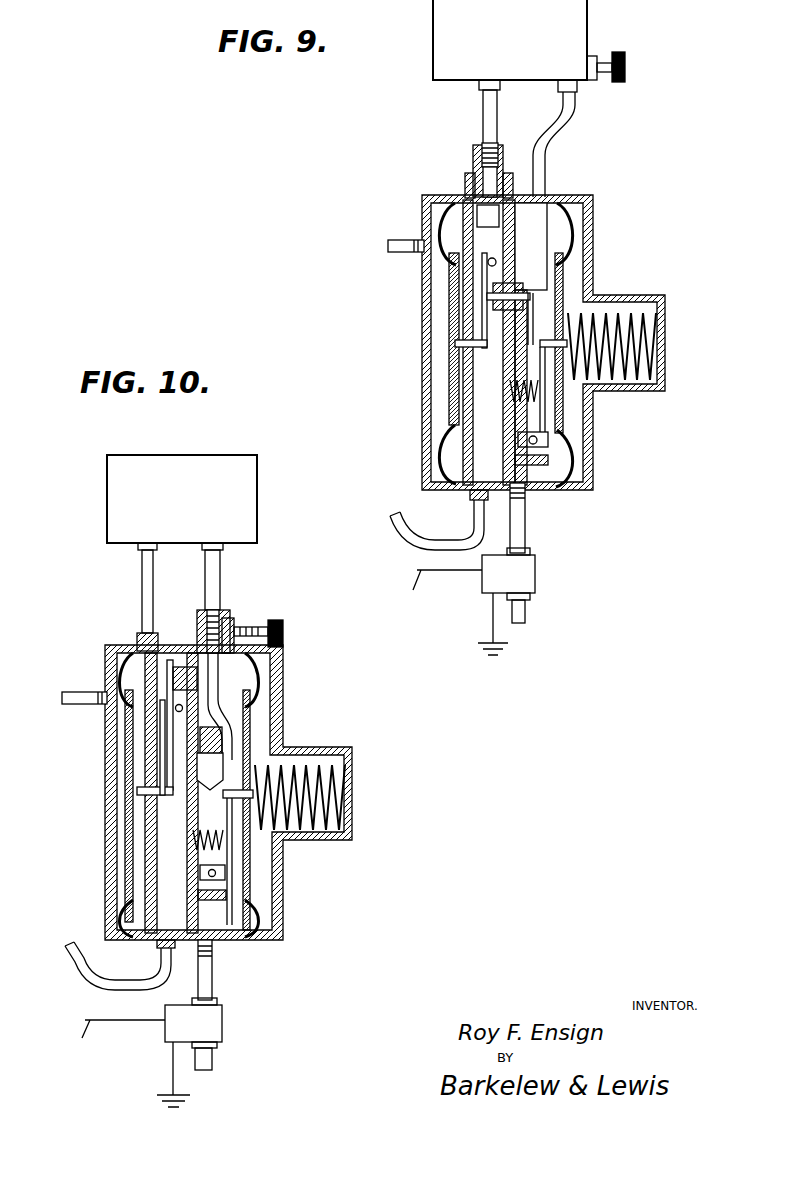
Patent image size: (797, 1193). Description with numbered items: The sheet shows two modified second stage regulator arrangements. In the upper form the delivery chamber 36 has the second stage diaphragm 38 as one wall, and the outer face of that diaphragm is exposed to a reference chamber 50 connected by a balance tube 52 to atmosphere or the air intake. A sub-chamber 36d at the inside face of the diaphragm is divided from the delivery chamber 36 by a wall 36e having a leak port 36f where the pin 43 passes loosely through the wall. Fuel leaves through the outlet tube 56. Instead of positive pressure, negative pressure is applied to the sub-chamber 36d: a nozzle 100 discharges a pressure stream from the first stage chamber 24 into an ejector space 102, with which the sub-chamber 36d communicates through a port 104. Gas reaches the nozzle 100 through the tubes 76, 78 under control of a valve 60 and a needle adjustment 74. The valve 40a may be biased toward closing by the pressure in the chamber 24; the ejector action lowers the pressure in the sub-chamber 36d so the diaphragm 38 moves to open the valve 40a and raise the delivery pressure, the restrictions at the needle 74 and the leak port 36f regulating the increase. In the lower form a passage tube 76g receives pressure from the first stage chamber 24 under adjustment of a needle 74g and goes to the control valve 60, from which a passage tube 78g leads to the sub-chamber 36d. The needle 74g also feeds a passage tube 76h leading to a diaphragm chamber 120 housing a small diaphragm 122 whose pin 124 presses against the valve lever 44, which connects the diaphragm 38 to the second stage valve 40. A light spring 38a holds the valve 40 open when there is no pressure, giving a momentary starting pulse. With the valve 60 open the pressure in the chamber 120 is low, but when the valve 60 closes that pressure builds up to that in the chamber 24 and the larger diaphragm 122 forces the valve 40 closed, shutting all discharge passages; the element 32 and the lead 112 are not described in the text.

In FIG. 9, the control valve 60 is at (510, 40).
In FIG. 10, the control valve 60 is at (182, 499).
In FIG. 9, the needle adjustment 74 is at (612, 56).
In FIG. 9, the tube 78 is at (483, 112).
In FIG. 9, the tube 76 is at (577, 115).
In FIG. 9, the nozzle 100 is at (478, 190).
In FIG. 9, the port 104 is at (468, 213).
In FIG. 9, the reference chamber 50 is at (438, 272).
In FIG. 9, the balance tube 52 is at (400, 240).
In FIG. 10, the balance tube 52 is at (78, 705).
In FIG. 9, the first stage chamber 24 is at (537, 218).
In FIG. 10, the first stage chamber 24 is at (230, 690).
In FIG. 9, the ejector space 102 is at (492, 227).
In FIG. 9, the second stage diaphragm 38 is at (452, 378).
In FIG. 10, the second stage diaphragm 38 is at (130, 853).
In FIG. 9, the sub-chamber 36d is at (460, 400).
In FIG. 10, the sub-chamber 36d is at (143, 672).
In FIG. 9, the wall 36e is at (452, 425).
In FIG. 10, the wall 36e is at (150, 873).
In FIG. 9, the delivery chamber 36 is at (478, 440).
In FIG. 10, the delivery chamber 36 is at (165, 893).
In FIG. 9, the leak port 36f is at (480, 335).
In FIG. 10, the leak port 36f is at (153, 813).
In FIG. 9, the valve 40a is at (533, 296).
In FIG. 9, the pin 43 is at (457, 343).
In FIG. 10, the pin 43 is at (137, 792).
In FIG. 9, the spring 32 is at (645, 325).
In FIG. 10, the spring 32 is at (333, 795).
In FIG. 9, the outlet tube 56 is at (395, 523).
In FIG. 10, the outlet tube 56 is at (78, 970).
In FIG. 9, the diaphragm chamber 120 is at (527, 520).
In FIG. 10, the diaphragm chamber 120 is at (210, 763).
In FIG. 9, the small diaphragm 122 is at (527, 577).
In FIG. 10, the small diaphragm 122 is at (222, 740).
In FIG. 9, the electrical lead 112 is at (460, 612).
In FIG. 10, the electrical lead 112 is at (136, 1063).
In FIG. 10, the passage tube 78g is at (142, 585).
In FIG. 10, the passage tube 76g is at (220, 586).
In FIG. 10, the needle 74g is at (283, 633).
In FIG. 10, the passage tube 76h is at (237, 695).
In FIG. 10, the second stage valve 40 is at (190, 665).
In FIG. 10, the lever 44 is at (170, 723).
In FIG. 10, the pin 124 is at (173, 757).
In FIG. 10, the light spring 38a is at (127, 771).